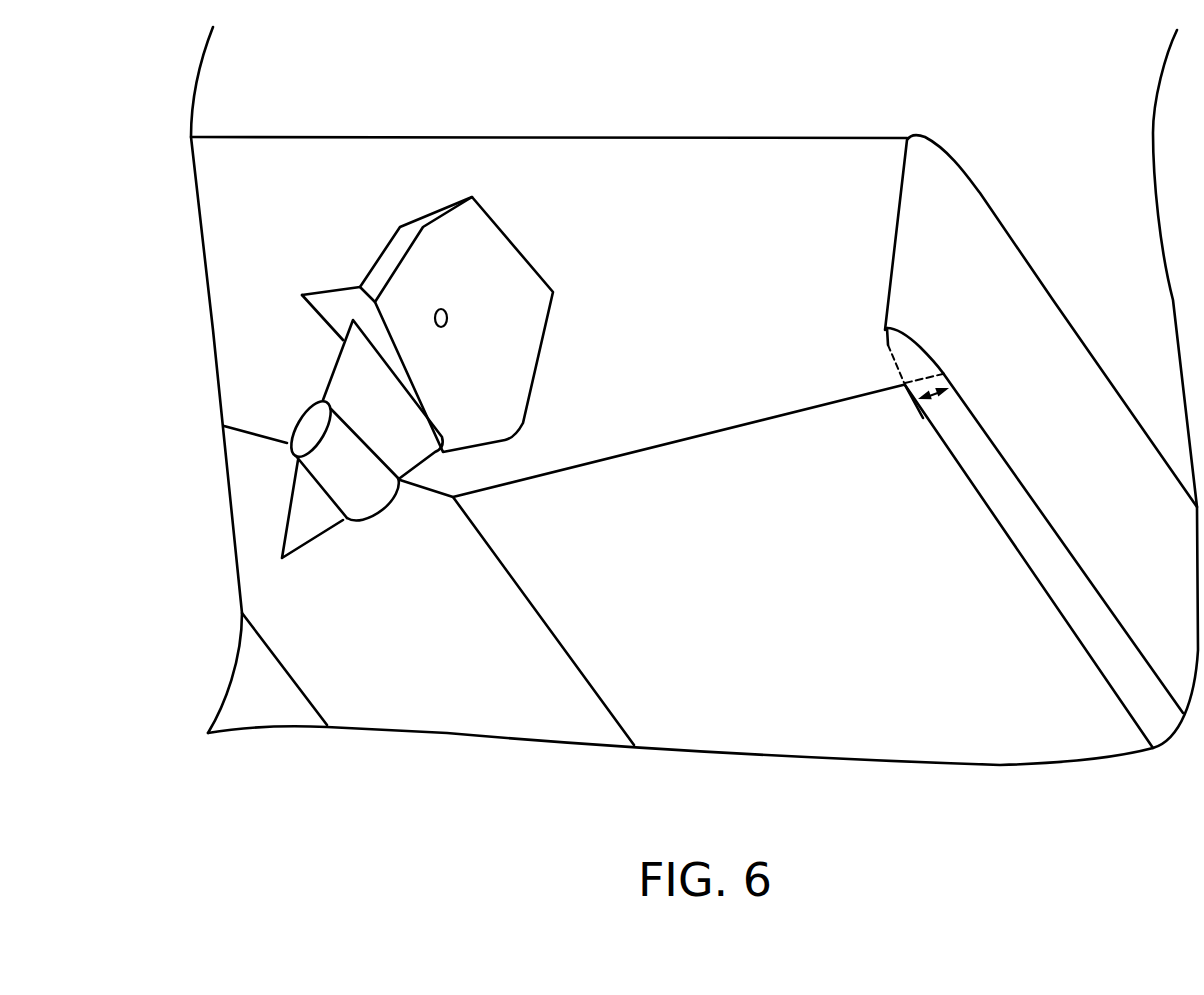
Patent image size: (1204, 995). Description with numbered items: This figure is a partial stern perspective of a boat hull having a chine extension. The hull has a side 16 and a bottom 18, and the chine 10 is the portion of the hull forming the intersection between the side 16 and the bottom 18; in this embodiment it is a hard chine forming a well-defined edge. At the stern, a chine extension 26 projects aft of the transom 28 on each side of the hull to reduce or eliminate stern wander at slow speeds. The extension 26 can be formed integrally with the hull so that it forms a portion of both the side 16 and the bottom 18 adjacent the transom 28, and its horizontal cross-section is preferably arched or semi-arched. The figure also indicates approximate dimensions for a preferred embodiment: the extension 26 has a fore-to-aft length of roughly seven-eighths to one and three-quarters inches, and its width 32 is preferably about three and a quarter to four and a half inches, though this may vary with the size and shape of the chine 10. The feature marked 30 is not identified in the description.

The chine 10 is at (1062, 511).
The side 16 is at (1075, 349).
The bottom 18 is at (727, 460).
The chine extension 26 is at (902, 352).
The transom 28 is at (729, 180).
The tab 30 is at (915, 368).
The width 32 is at (930, 400).